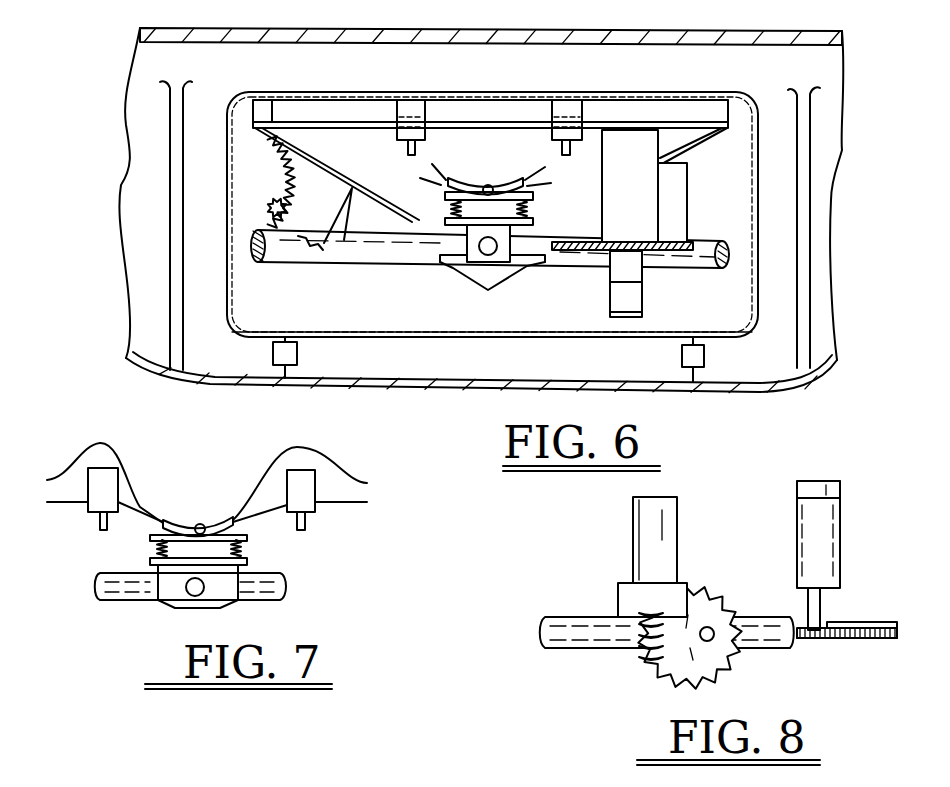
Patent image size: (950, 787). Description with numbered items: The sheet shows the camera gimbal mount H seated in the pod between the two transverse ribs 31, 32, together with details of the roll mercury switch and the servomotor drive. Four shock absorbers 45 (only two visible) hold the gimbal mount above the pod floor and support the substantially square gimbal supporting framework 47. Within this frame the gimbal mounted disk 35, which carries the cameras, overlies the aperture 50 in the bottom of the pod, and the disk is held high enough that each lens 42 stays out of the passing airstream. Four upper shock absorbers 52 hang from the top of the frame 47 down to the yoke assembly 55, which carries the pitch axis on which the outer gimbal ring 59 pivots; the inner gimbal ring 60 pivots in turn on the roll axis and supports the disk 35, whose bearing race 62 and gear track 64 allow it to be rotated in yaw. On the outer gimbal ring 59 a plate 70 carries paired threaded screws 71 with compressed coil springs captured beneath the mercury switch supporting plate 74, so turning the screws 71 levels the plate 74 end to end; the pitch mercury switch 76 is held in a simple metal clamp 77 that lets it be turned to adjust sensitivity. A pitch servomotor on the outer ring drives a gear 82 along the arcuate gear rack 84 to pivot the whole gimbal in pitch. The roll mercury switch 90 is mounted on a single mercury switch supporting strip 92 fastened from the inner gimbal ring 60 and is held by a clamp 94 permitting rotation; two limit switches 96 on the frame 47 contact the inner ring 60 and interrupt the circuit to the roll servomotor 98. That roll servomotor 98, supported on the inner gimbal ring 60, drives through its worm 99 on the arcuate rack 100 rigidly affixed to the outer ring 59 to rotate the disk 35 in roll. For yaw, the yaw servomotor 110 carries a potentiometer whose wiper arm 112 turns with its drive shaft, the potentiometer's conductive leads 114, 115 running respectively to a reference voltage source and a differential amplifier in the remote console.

In FIG. 6, the transverse rib 31 is at (838, 160).
In FIG. 6, the transverse rib 32 is at (165, 212).
In FIG. 6, the gimbal mounted disk 35 is at (583, 250).
In FIG. 8, the gimbal mounted disk 35 is at (875, 624).
In FIG. 6, the lens 42 is at (643, 287).
In FIG. 6, the shock absorbers 45 is at (703, 360).
In FIG. 6, the gimbal supporting framework 47 is at (228, 108).
In FIG. 6, the aperture 50 is at (652, 332).
In FIG. 6, the shock absorbers 52 is at (262, 102).
In FIG. 6, the yoke assembly 55 is at (356, 120).
In FIG. 6, the outer gimbal ring 59 is at (312, 262).
In FIG. 6, the plate 70 is at (455, 233).
In FIG. 6, the threaded screws 71 is at (452, 213).
In FIG. 6, the mercury switch supporting plate 74 is at (505, 233).
In FIG. 6, the pitch mercury switch 76 is at (500, 107).
In FIG. 6, the clamp 77 is at (488, 183).
In FIG. 6, the gear 82 is at (267, 204).
In FIG. 6, the arcuate gear rack 84 is at (280, 168).
In FIG. 6, the gimbal mount H is at (637, 95).
In FIG. 7, the inner gimbal ring 60 is at (268, 590).
In FIG. 7, the roll mercury switch 90 is at (167, 522).
In FIG. 7, the mercury switch supporting strip 92 is at (163, 563).
In FIG. 7, the clamp 94 is at (200, 526).
In FIG. 7, the limit switches 96 is at (95, 505).
In FIG. 8, the roll servomotor 98 is at (663, 558).
In FIG. 8, the worm 99 is at (650, 665).
In FIG. 8, the arcuate rack 100 is at (713, 658).
In FIG. 8, the yaw servomotor 110 is at (842, 550).
In FIG. 8, the wiper arm 112 is at (842, 490).
In FIG. 8, the conductive lead 114 is at (808, 480).
In FIG. 8, the conductive lead 115 is at (827, 481).
In FIG. 8, the bearing race 62 is at (843, 622).
In FIG. 8, the gear track 64 is at (862, 640).